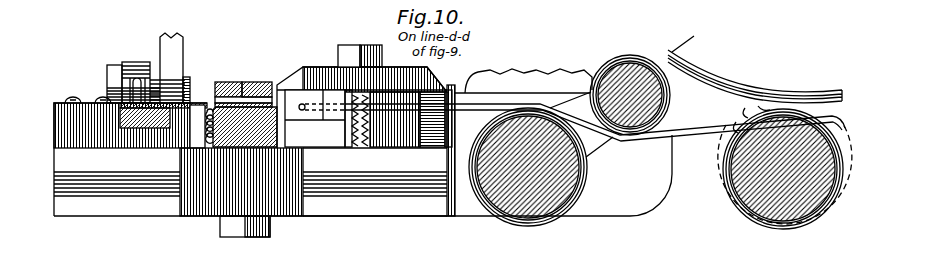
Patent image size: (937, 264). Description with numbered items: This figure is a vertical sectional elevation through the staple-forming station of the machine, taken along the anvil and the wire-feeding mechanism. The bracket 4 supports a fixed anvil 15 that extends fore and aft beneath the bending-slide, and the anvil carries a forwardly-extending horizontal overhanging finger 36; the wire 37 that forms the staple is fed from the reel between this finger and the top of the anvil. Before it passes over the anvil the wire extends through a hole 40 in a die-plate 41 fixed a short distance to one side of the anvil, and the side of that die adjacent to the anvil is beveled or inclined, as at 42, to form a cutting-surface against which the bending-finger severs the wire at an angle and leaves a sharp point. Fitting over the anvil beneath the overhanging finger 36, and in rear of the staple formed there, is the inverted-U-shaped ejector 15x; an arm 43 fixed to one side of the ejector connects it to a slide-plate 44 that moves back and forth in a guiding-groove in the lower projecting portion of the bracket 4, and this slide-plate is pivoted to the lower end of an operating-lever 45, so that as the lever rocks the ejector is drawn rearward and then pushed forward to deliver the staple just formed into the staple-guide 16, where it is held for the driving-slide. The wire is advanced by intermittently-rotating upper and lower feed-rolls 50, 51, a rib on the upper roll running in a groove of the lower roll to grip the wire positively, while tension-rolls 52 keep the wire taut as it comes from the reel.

The anvil 15 is at (283, 150).
The ejector 15x is at (223, 106).
The staple-guide 16 is at (243, 100).
The overhanging finger 36 is at (256, 83).
The beveled cutting-surface 42 is at (299, 95).
The die-plate 41 is at (335, 98).
The hole 40 is at (304, 110).
The wire 37 is at (455, 100).
The slide-plate 44 is at (141, 90).
The operating-lever 45 is at (175, 53).
The arm 43 is at (188, 91).
The bracket 4 is at (563, 135).
The tension-rolls 52 is at (590, 155).
The upper feed-roll 50 is at (755, 84).
The lower feed-roll 51 is at (733, 198).